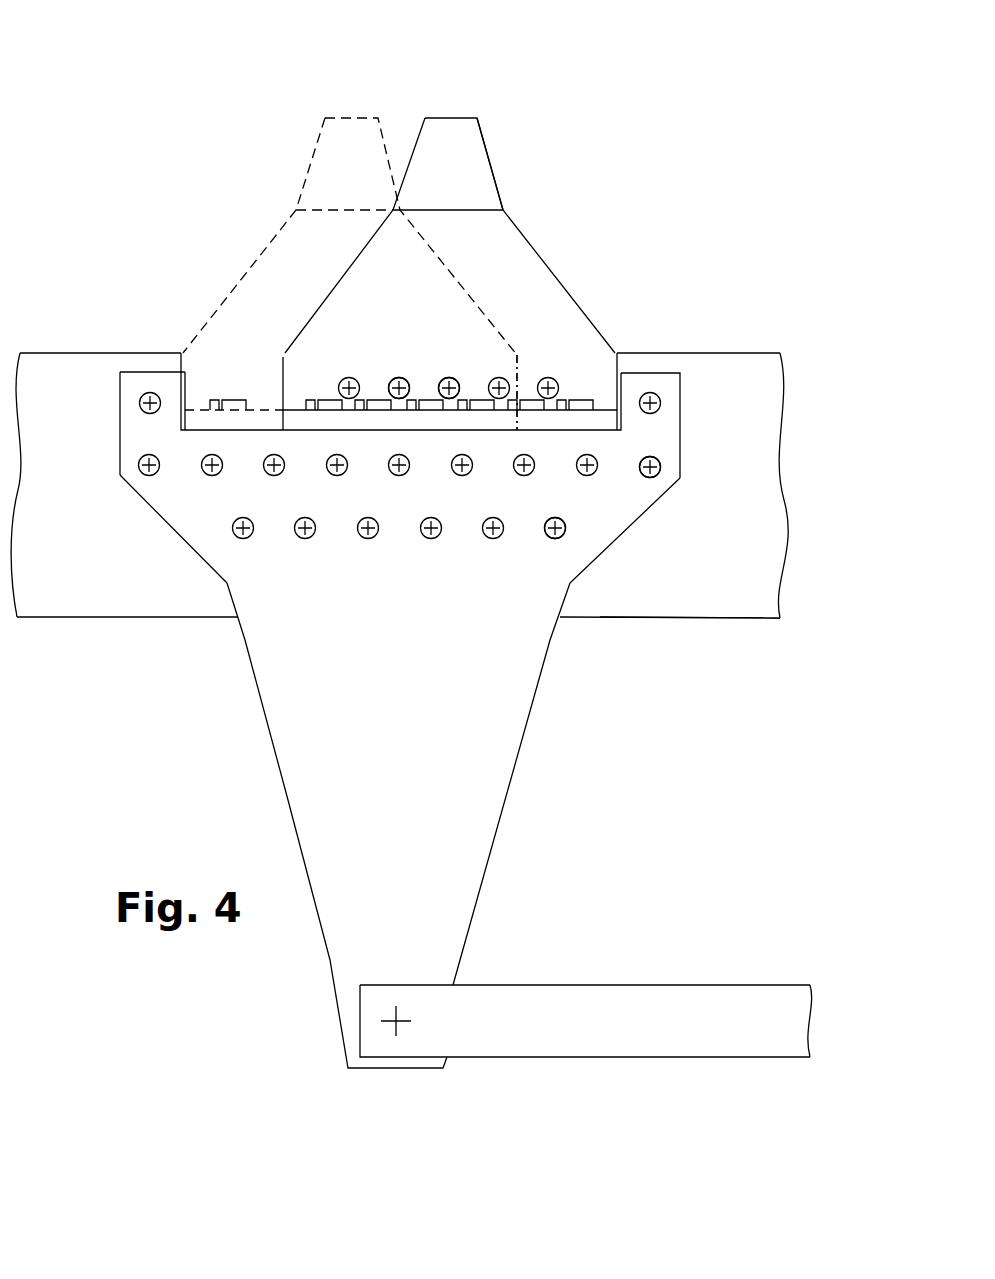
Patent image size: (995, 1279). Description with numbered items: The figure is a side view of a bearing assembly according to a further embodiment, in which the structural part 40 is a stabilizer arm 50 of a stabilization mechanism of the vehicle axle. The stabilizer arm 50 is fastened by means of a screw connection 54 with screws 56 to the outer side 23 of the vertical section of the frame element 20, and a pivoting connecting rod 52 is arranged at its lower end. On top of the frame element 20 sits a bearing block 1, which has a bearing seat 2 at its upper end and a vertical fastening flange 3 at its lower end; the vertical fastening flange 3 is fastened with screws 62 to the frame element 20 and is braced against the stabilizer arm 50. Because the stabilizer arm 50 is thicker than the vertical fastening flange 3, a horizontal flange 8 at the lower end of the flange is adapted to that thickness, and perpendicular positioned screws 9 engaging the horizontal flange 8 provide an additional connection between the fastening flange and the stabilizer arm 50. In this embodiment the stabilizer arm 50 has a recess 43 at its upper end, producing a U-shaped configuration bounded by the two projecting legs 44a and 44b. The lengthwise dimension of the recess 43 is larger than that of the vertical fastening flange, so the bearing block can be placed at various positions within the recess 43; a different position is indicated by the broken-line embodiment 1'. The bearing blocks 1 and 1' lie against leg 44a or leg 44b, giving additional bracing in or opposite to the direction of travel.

The bearing block 1 is at (450, 182).
The broken-line embodiment of the bearing block 1' is at (350, 220).
The bearing seat 2 is at (490, 145).
The vertical fastening flange 3 is at (297, 365).
The horizontal flange 8 is at (423, 418).
The perpendicular positioned screws 9 is at (372, 400).
The frame element 20 is at (736, 349).
The outer side of the vertical section 23 is at (750, 572).
The structural part 40 is at (465, 857).
The stabilizer arm 50 is at (511, 784).
The recess 43 is at (525, 430).
The projecting leg 44a is at (140, 383).
The projecting leg 44b is at (660, 385).
The pivoting connecting rod 52 is at (727, 1038).
The screw connection 54 is at (621, 450).
The screws 56 is at (565, 535).
The screws 62 is at (443, 380).